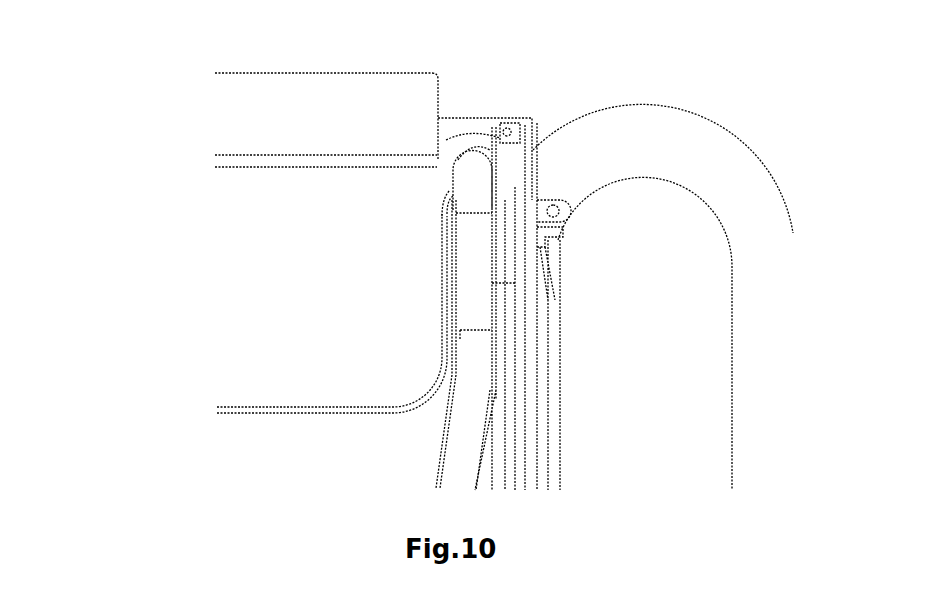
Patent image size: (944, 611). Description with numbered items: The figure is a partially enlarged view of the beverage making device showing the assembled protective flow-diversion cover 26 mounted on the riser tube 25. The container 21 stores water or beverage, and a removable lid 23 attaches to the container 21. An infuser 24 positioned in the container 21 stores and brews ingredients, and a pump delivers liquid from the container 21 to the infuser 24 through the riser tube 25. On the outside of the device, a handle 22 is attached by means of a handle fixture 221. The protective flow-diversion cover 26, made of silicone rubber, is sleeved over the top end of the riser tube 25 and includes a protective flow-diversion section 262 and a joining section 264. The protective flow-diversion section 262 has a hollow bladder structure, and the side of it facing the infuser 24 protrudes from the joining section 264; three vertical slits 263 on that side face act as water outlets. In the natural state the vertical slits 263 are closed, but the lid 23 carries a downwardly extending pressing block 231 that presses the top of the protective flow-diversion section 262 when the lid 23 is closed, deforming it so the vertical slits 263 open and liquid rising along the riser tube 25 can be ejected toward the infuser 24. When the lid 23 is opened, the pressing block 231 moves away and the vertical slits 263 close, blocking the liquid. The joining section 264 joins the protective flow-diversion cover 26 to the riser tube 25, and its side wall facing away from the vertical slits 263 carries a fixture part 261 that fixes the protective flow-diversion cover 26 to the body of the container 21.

The container 21 is at (272, 453).
The handle 22 is at (718, 190).
The handle fixture 221 is at (505, 197).
The lid 23 is at (288, 134).
The pressing block 231 is at (457, 192).
The infuser 24 is at (278, 310).
The riser tube 25 is at (480, 383).
The protective flow-diversion cover 26 is at (492, 187).
The fixture part 261 is at (503, 257).
The protective flow-diversion section 262 is at (468, 182).
The vertical slit 263 is at (452, 197).
The joining section 264 is at (476, 300).